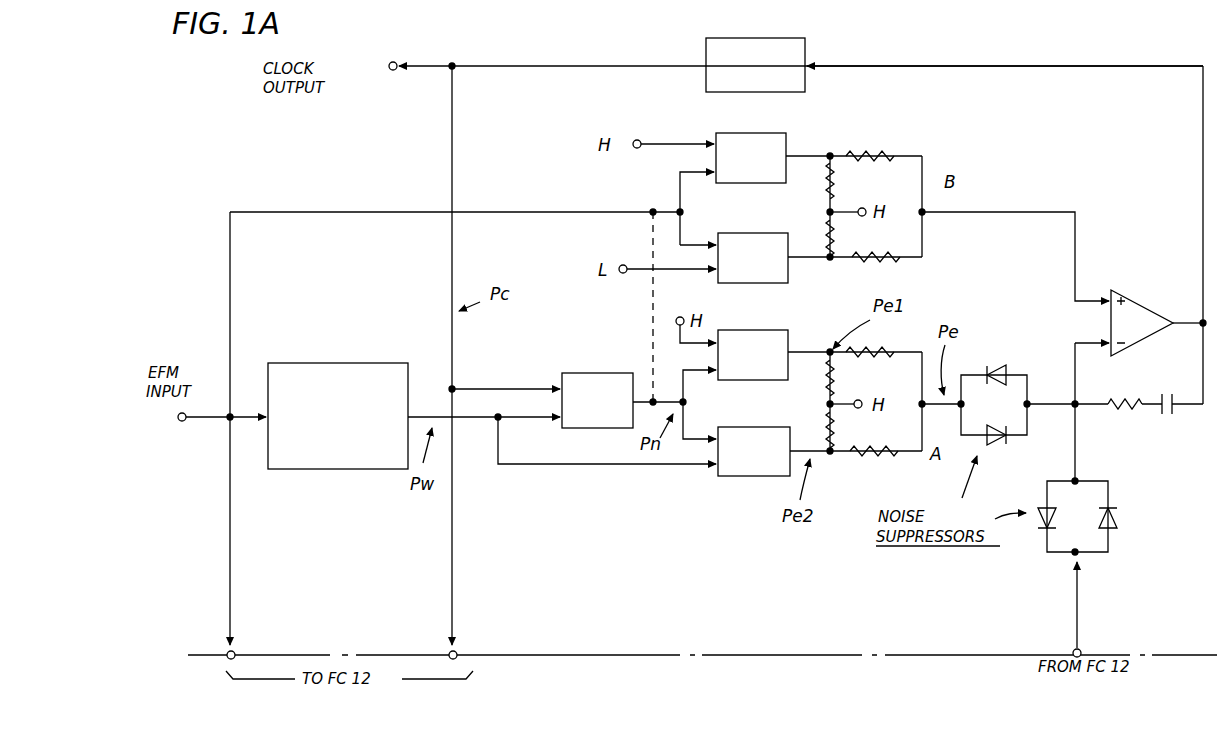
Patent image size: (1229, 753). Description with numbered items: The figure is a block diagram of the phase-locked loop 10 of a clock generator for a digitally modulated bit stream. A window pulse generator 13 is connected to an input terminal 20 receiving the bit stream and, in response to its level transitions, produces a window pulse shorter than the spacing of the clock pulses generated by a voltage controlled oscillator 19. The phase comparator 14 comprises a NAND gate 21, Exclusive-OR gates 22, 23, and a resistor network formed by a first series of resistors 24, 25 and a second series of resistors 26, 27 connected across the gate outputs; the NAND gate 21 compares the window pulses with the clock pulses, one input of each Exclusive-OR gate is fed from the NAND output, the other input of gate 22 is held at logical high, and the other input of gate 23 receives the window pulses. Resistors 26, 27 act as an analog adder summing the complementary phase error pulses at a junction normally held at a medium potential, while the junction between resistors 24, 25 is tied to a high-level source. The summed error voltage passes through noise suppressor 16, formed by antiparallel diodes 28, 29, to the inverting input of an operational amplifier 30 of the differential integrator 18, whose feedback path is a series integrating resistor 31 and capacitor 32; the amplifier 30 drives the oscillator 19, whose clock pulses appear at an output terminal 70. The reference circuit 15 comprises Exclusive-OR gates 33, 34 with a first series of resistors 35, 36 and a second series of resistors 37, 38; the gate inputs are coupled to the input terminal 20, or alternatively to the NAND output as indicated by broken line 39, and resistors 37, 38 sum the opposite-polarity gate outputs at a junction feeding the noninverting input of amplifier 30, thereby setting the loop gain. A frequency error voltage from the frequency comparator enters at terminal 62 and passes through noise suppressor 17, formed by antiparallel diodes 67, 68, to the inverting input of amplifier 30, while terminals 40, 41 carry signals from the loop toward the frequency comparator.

The phase-locked loop 10 is at (775, 614).
The window pulse generator 13 is at (360, 363).
The phase comparator 14 is at (688, 527).
The reference circuit 15 is at (760, 219).
The noise suppressor 16 is at (1008, 352).
The noise suppressor 17 is at (1170, 532).
The differential integrator 18 is at (1150, 276).
The voltage controlled oscillator 19 is at (805, 52).
The input terminal 20 is at (183, 422).
The NAND gate 21 is at (580, 373).
The Exclusive-OR gate 22 is at (788, 333).
The Exclusive-OR gate 23 is at (745, 427).
The resistor 24 is at (848, 380).
The resistor 25 is at (838, 432).
The resistor 26 is at (878, 347).
The resistor 27 is at (866, 463).
The diode 28 is at (1003, 372).
The diode 29 is at (990, 438).
The operational amplifier 30 is at (1140, 306).
The integrating resistor 31 is at (1120, 412).
The capacitor 32 is at (1170, 418).
The Exclusive-OR gate 33 is at (786, 146).
The Exclusive-OR gate 34 is at (788, 240).
The resistor 35 is at (847, 186).
The resistor 36 is at (846, 236).
The resistor 37 is at (878, 151).
The resistor 38 is at (877, 244).
The broken line 39 is at (652, 300).
The output terminal to frequency comparator 40 is at (236, 654).
The output terminal to frequency comparator 41 is at (458, 654).
The input terminal from frequency comparator 62 is at (1081, 650).
The diode 67 is at (1042, 530).
The diode 68 is at (1115, 512).
The output terminal 70 is at (393, 71).